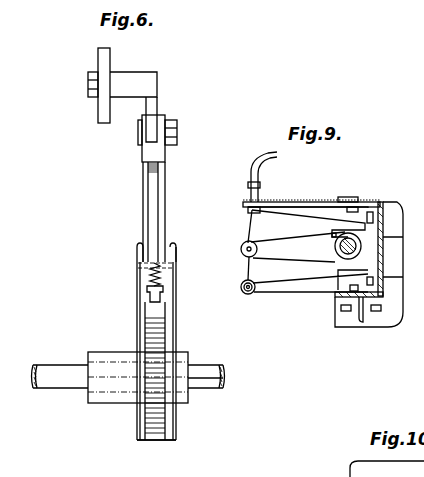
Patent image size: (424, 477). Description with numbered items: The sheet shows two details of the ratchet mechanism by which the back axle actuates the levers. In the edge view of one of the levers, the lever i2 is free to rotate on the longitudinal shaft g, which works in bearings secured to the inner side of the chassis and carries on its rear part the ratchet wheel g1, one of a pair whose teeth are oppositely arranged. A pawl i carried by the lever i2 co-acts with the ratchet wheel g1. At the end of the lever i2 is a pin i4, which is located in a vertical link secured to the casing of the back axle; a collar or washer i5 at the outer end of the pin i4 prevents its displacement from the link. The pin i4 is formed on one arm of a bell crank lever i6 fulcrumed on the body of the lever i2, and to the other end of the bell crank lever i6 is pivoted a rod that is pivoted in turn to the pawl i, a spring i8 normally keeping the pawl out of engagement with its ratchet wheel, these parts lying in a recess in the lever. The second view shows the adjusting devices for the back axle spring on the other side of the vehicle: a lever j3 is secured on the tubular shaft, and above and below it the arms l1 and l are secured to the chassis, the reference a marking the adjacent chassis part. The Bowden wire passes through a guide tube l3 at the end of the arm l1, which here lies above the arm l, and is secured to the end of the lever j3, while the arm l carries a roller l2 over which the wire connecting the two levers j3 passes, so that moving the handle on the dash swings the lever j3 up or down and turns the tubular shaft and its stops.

In FIG. 6, the collar or washer i5 is at (103, 59).
In FIG. 6, the pin i4 is at (132, 85).
In FIG. 6, the bell crank lever i6 is at (152, 100).
In FIG. 6, the lever i2 is at (155, 199).
In FIG. 6, the spring i8 is at (160, 277).
In FIG. 6, the pawl i is at (166, 310).
In FIG. 6, the longitudinal shaft g is at (72, 380).
In FIG. 6, the ratchet wheel g1 is at (157, 430).
In FIG. 9, the housing a is at (368, 201).
In FIG. 9, the arm l1 is at (308, 215).
In FIG. 9, the guide tube l3 is at (253, 171).
In FIG. 9, the lever j3 is at (280, 251).
In FIG. 9, the roller l2 is at (242, 288).
In FIG. 9, the arm l is at (313, 286).